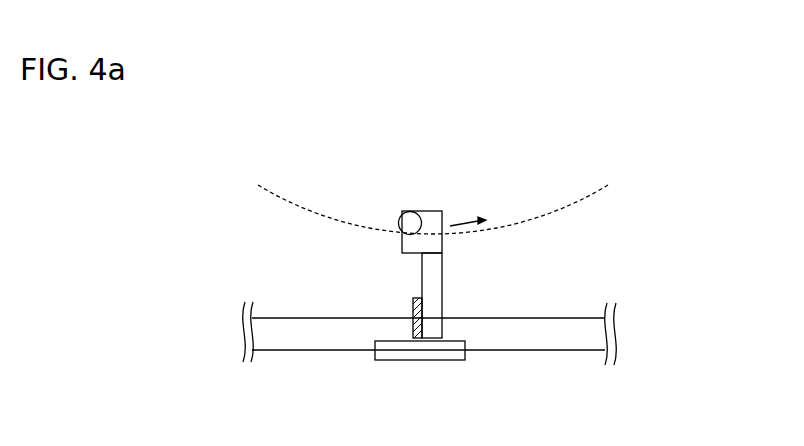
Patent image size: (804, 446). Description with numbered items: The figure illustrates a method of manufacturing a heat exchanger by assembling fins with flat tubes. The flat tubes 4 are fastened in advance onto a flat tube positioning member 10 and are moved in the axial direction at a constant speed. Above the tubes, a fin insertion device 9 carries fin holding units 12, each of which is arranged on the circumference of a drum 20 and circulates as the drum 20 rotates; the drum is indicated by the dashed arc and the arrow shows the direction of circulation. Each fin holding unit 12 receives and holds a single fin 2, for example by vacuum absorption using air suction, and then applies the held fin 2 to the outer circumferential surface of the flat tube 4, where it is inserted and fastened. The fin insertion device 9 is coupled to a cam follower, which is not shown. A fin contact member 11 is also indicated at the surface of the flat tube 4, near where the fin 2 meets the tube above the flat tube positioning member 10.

The flat tube 4 is at (317, 350).
The drum 20 is at (338, 221).
The fin insertion device 9 is at (430, 211).
The fin holding unit 12 is at (442, 295).
The fin 2 is at (410, 300).
The fin contact member 11 is at (372, 318).
The flat tube positioning member 10 is at (443, 360).